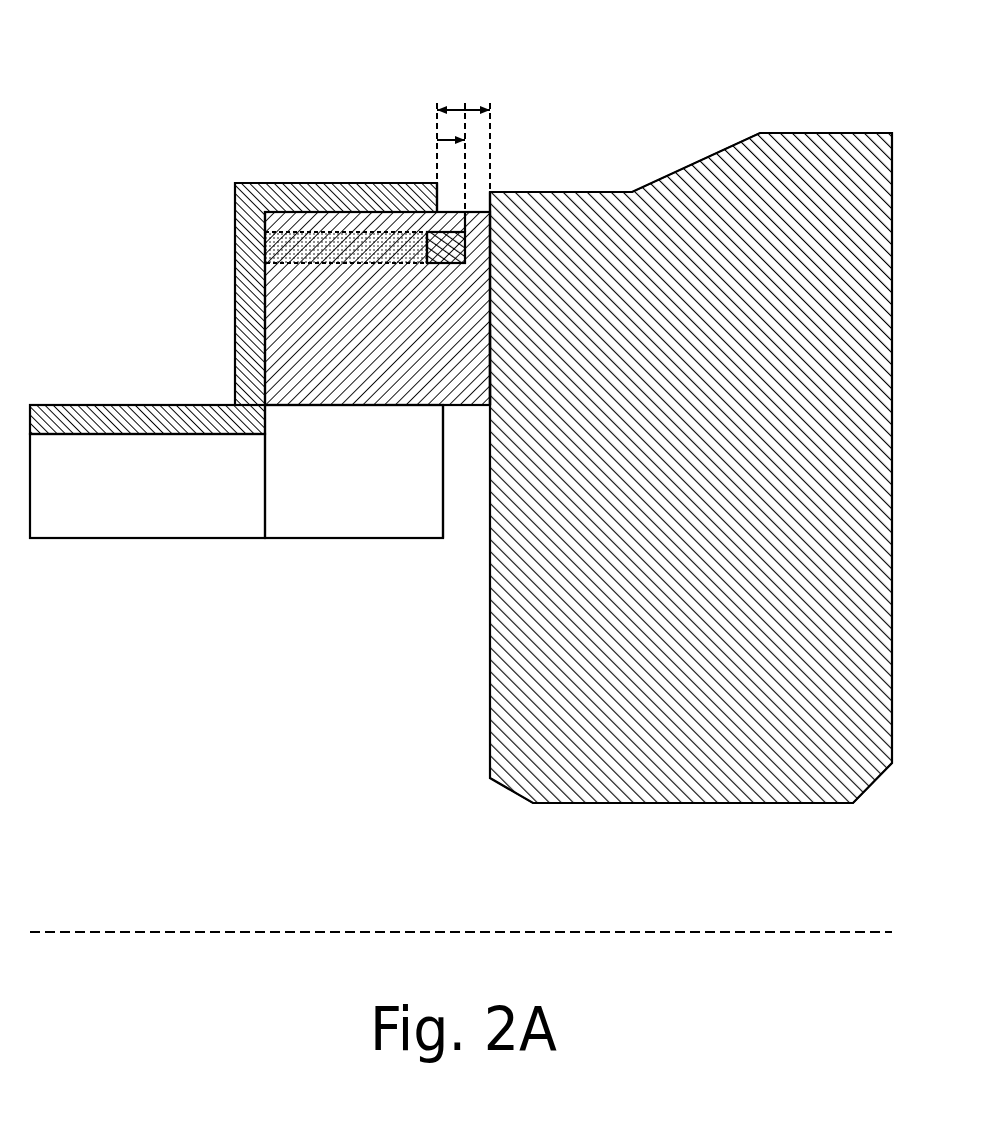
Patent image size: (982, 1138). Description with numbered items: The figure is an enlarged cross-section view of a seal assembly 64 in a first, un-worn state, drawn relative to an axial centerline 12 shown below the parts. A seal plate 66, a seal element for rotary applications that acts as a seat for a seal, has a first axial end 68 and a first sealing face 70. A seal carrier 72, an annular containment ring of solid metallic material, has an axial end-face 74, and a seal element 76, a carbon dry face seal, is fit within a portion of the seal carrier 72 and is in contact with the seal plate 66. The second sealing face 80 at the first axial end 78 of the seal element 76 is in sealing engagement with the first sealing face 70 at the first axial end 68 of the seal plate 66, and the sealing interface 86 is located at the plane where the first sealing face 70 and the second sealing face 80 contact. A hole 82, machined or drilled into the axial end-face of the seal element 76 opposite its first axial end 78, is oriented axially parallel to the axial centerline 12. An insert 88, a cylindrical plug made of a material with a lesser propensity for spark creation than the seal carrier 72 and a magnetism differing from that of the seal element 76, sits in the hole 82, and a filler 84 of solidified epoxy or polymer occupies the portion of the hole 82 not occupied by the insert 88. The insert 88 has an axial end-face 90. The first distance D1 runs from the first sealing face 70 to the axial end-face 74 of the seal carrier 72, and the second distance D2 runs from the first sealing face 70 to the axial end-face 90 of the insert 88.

The axial centerline 12 is at (172, 932).
The seal assembly 64 is at (186, 135).
The seal plate 66 is at (824, 128).
The first axial end 68 is at (496, 192).
The first sealing face 70 is at (490, 223).
The seal carrier 72 is at (78, 400).
The axial end-face 74 is at (437, 191).
The seal element 76 is at (356, 418).
The first axial end 78 is at (478, 408).
The second sealing face 80 is at (487, 378).
The hole 82 is at (328, 253).
The filler 84 is at (317, 231).
The sealing interface 86 is at (476, 332).
The insert 88 is at (428, 251).
The axial end-face 90 is at (465, 247).
The first distance D1 is at (468, 110).
The second distance D2 is at (495, 140).